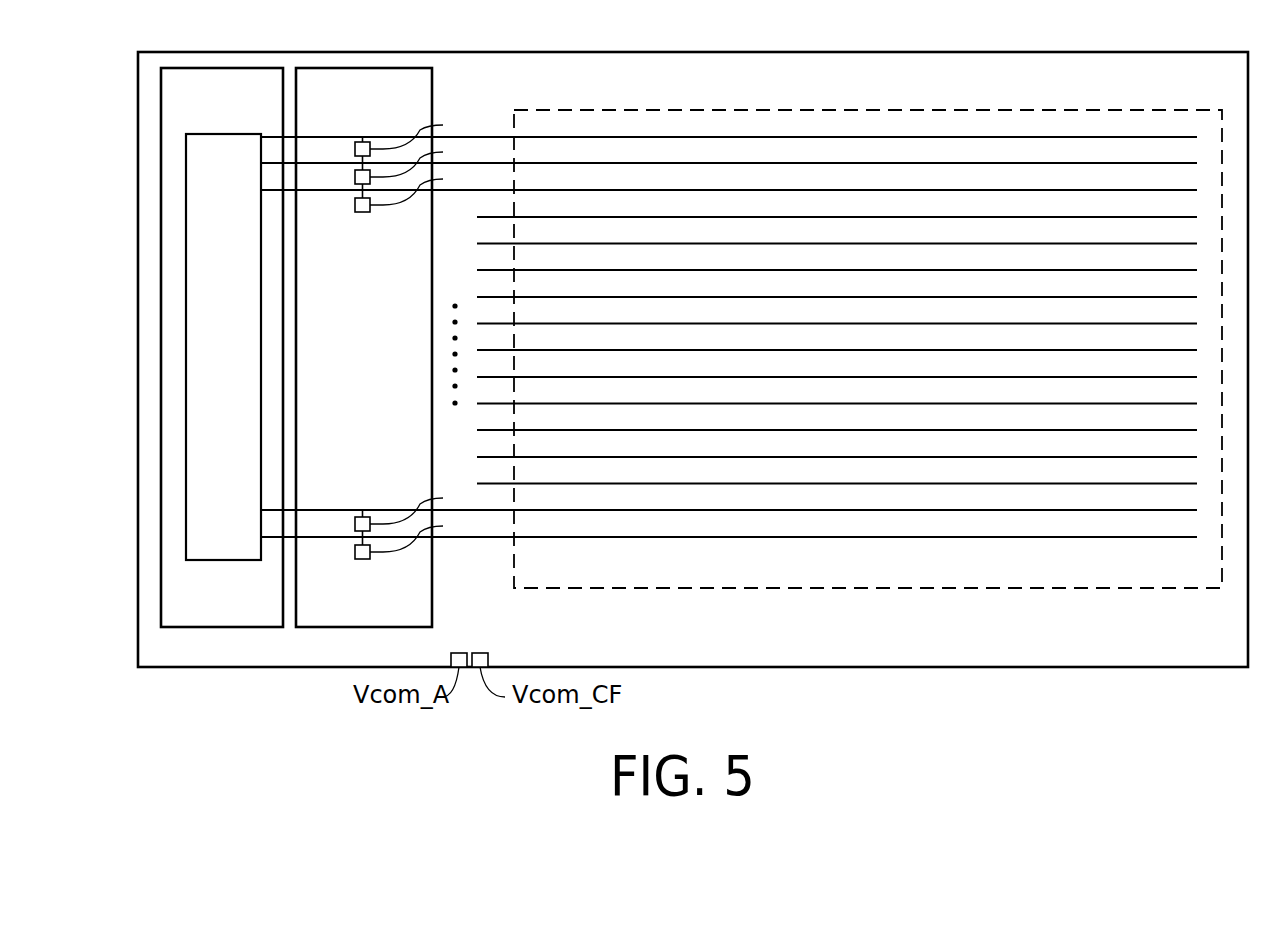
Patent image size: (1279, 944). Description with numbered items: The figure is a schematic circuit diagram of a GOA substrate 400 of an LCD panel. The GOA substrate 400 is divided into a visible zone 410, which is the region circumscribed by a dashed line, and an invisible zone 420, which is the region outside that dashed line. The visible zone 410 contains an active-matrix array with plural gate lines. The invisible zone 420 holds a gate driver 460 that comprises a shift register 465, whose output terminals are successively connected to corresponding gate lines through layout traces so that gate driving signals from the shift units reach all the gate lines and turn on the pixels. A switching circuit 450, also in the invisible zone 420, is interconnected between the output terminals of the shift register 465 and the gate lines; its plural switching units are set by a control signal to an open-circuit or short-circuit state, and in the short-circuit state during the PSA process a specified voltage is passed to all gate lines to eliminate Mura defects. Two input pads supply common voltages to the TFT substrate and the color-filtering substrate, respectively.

The GOA substrate 400 is at (1100, 50).
The visible zone 410 is at (915, 122).
The invisible zone 420 is at (810, 72).
The switching circuit 450 is at (413, 68).
The gate driver 460 is at (205, 68).
The shift register 465 is at (186, 272).